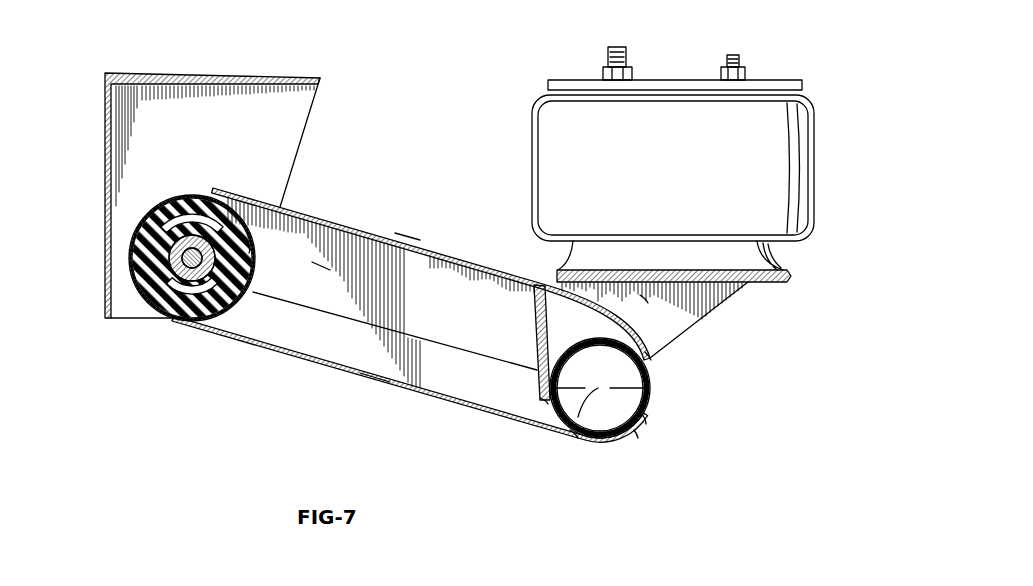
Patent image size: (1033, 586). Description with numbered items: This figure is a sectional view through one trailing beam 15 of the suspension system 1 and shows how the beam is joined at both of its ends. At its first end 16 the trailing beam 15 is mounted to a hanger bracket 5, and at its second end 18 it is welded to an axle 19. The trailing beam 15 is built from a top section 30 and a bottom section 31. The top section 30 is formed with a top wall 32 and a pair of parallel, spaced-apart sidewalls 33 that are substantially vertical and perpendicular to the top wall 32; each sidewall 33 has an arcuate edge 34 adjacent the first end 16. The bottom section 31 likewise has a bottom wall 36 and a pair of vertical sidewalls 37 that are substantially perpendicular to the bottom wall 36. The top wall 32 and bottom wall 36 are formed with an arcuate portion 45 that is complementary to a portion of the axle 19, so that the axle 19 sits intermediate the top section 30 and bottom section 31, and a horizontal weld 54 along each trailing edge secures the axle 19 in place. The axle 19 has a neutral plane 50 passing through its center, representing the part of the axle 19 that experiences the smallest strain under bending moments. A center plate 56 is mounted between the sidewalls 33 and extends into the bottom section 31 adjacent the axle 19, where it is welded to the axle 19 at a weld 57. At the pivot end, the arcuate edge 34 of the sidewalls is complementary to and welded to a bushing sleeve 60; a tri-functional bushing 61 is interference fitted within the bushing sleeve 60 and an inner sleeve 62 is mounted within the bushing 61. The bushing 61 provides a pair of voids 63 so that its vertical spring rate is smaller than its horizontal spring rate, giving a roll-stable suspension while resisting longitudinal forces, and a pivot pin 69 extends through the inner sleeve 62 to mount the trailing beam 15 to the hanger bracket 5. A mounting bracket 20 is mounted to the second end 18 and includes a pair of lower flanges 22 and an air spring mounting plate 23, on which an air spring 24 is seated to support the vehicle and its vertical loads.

The suspension system 1 is at (226, 414).
The hanger bracket 5 is at (104, 144).
The trailing beam 15 is at (438, 242).
The first end 16 is at (214, 178).
The second end 18 is at (628, 447).
The axle 19 is at (650, 378).
The mounting bracket 20 is at (708, 322).
The lower flange 22 is at (727, 298).
The air spring mounting plate 23 is at (780, 283).
The air spring 24 is at (818, 130).
The top section 30 is at (491, 255).
The bottom section 31 is at (368, 392).
The top wall 32 is at (397, 236).
The sidewall 33 is at (318, 265).
The arcuate edge 34 is at (260, 255).
The bottom wall 36 is at (453, 410).
The sidewall 37 is at (284, 334).
The arcuate portion 45 is at (645, 300).
The neutral plane 50 is at (573, 432).
The horizontal weld 54 is at (648, 357).
The center plate 56 is at (533, 332).
The weld 57 is at (543, 400).
The bushing sleeve 60 is at (147, 212).
The bushing 61 is at (138, 262).
The inner sleeve 62 is at (170, 270).
The void 63 is at (178, 226).
The pivot pin 69 is at (203, 265).